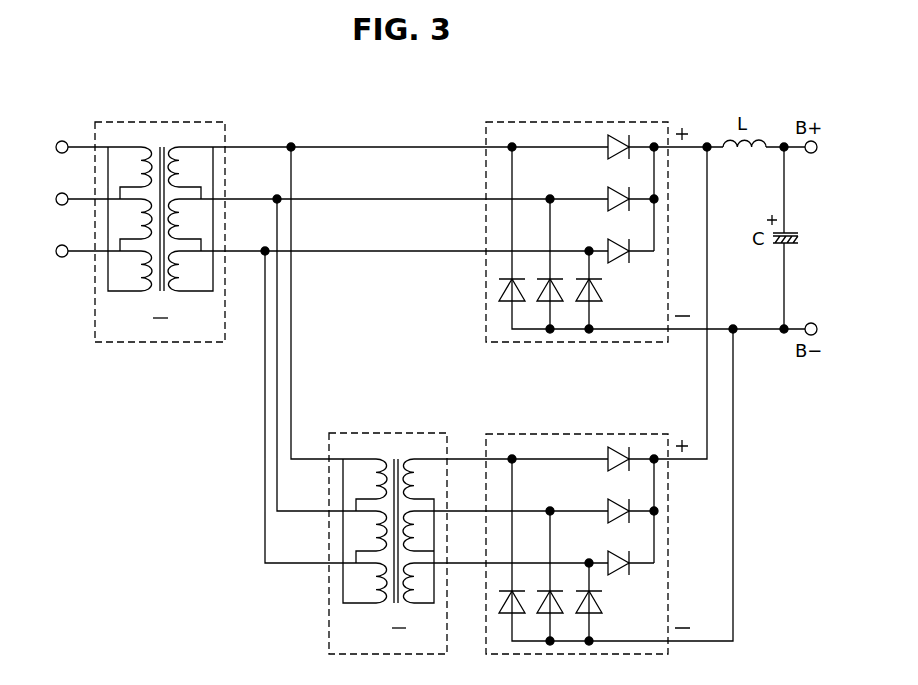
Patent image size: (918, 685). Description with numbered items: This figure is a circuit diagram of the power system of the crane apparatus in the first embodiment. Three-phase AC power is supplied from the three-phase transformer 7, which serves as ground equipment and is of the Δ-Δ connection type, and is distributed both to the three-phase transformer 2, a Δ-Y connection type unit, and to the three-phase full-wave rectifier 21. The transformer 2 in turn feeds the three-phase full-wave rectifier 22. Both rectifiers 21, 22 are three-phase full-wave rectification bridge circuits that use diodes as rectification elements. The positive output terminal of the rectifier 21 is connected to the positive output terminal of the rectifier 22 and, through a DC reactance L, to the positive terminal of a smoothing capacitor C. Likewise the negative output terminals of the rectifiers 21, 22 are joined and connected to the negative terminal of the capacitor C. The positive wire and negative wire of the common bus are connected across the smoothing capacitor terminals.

The three-phase transformer 7 is at (176, 120).
The three-phase transformer 2 is at (395, 431).
The three-phase full-wave rectifier 21 is at (607, 119).
The three-phase full-wave rectifier 22 is at (607, 431).